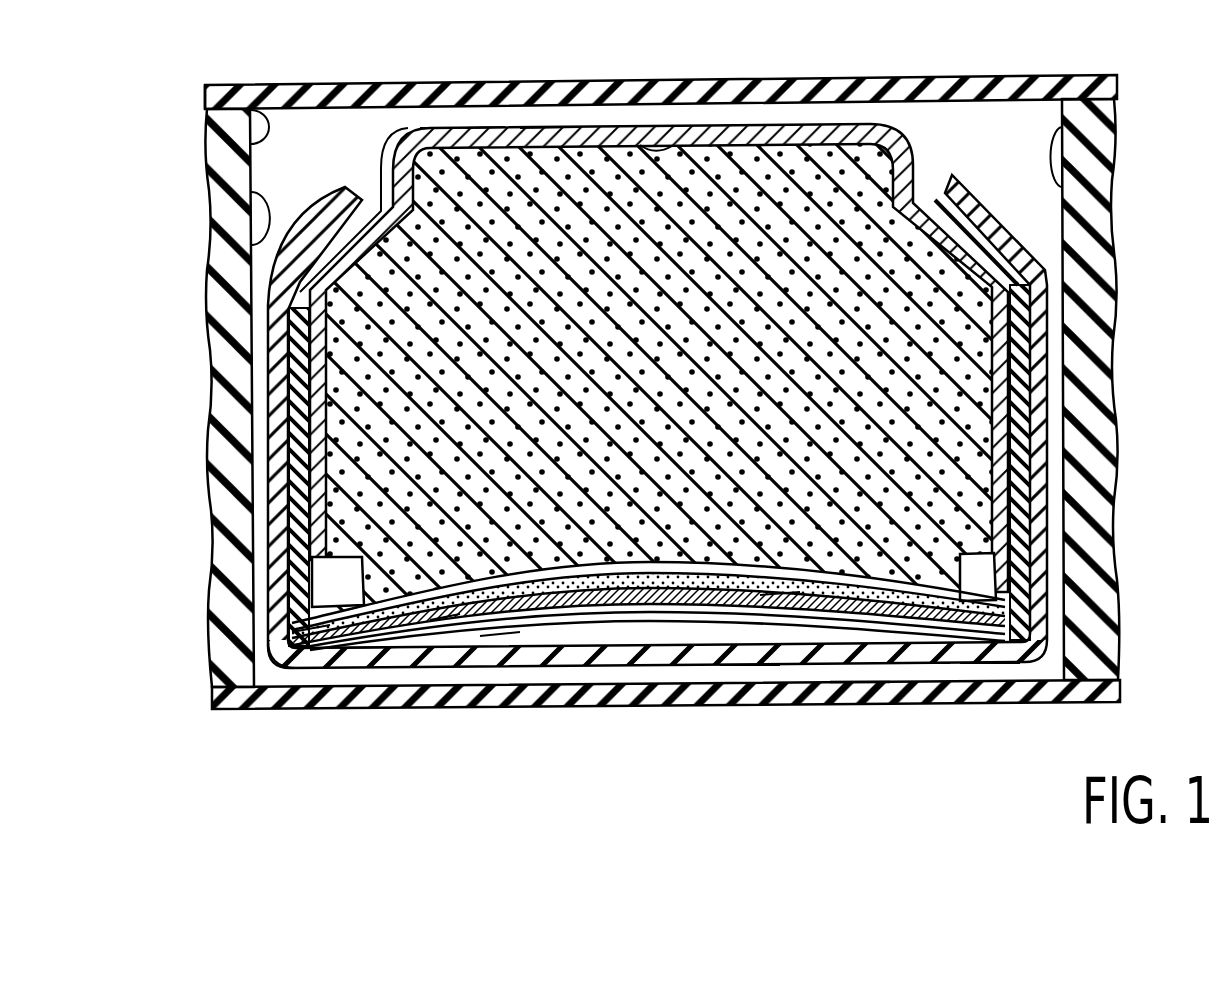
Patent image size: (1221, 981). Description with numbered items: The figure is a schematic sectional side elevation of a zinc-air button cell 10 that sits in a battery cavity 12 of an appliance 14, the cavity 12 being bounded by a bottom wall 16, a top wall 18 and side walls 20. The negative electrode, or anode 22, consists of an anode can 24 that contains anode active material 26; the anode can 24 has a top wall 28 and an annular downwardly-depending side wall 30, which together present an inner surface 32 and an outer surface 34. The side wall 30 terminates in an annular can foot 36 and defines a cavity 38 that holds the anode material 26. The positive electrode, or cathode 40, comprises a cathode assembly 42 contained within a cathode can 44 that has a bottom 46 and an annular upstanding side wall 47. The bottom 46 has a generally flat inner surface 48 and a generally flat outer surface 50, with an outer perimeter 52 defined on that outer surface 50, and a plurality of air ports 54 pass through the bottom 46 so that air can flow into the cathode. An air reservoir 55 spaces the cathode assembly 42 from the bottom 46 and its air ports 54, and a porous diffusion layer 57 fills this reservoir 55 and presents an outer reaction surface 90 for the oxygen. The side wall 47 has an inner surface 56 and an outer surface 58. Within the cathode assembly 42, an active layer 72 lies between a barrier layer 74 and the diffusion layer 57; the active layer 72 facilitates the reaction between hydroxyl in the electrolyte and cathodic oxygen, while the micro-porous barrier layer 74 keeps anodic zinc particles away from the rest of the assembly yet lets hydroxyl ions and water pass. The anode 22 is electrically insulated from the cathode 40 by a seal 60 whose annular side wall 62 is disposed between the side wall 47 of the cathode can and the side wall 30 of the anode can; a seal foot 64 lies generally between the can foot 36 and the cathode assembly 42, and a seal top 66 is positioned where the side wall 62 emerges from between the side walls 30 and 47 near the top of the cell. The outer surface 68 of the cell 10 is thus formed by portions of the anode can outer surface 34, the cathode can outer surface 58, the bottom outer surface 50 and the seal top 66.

The button cell 10 is at (438, 116).
The battery cavity 12 is at (267, 87).
The appliance 14 is at (443, 720).
The bottom wall 16 is at (813, 680).
The top wall 18 is at (613, 82).
The side walls 20 is at (250, 246).
The anode 22 is at (824, 108).
The anode can 24 is at (763, 106).
The anode active material 26 is at (622, 505).
The top wall 28 is at (547, 128).
The side wall 30 is at (1023, 313).
The inner surface 32 is at (677, 142).
The outer surface 34 is at (737, 125).
The can foot 36 is at (310, 583).
The cavity 38 is at (767, 160).
The cathode 40 is at (749, 680).
The cathode assembly 42 is at (553, 600).
The cathode can 44 is at (916, 675).
The bottom 46 is at (986, 675).
The side wall 47 is at (262, 381).
The inner surface 48 is at (335, 617).
The outer surface 50 is at (410, 652).
The outer perimeter 52 is at (268, 660).
The air ports 54 is at (500, 640).
The air reservoir 55 is at (787, 590).
The inner surface 56 is at (1048, 402).
The porous diffusion layer 57 is at (590, 582).
The outer surface 58 is at (1047, 450).
The seal 60 is at (297, 317).
The side wall 62 is at (300, 441).
The seal foot 64 is at (1010, 595).
The seal top 66 is at (922, 203).
The outer surface 68 is at (483, 118).
The active layer 72 is at (704, 583).
The barrier layer 74 is at (369, 664).
The outer reaction surface 90 is at (446, 615).